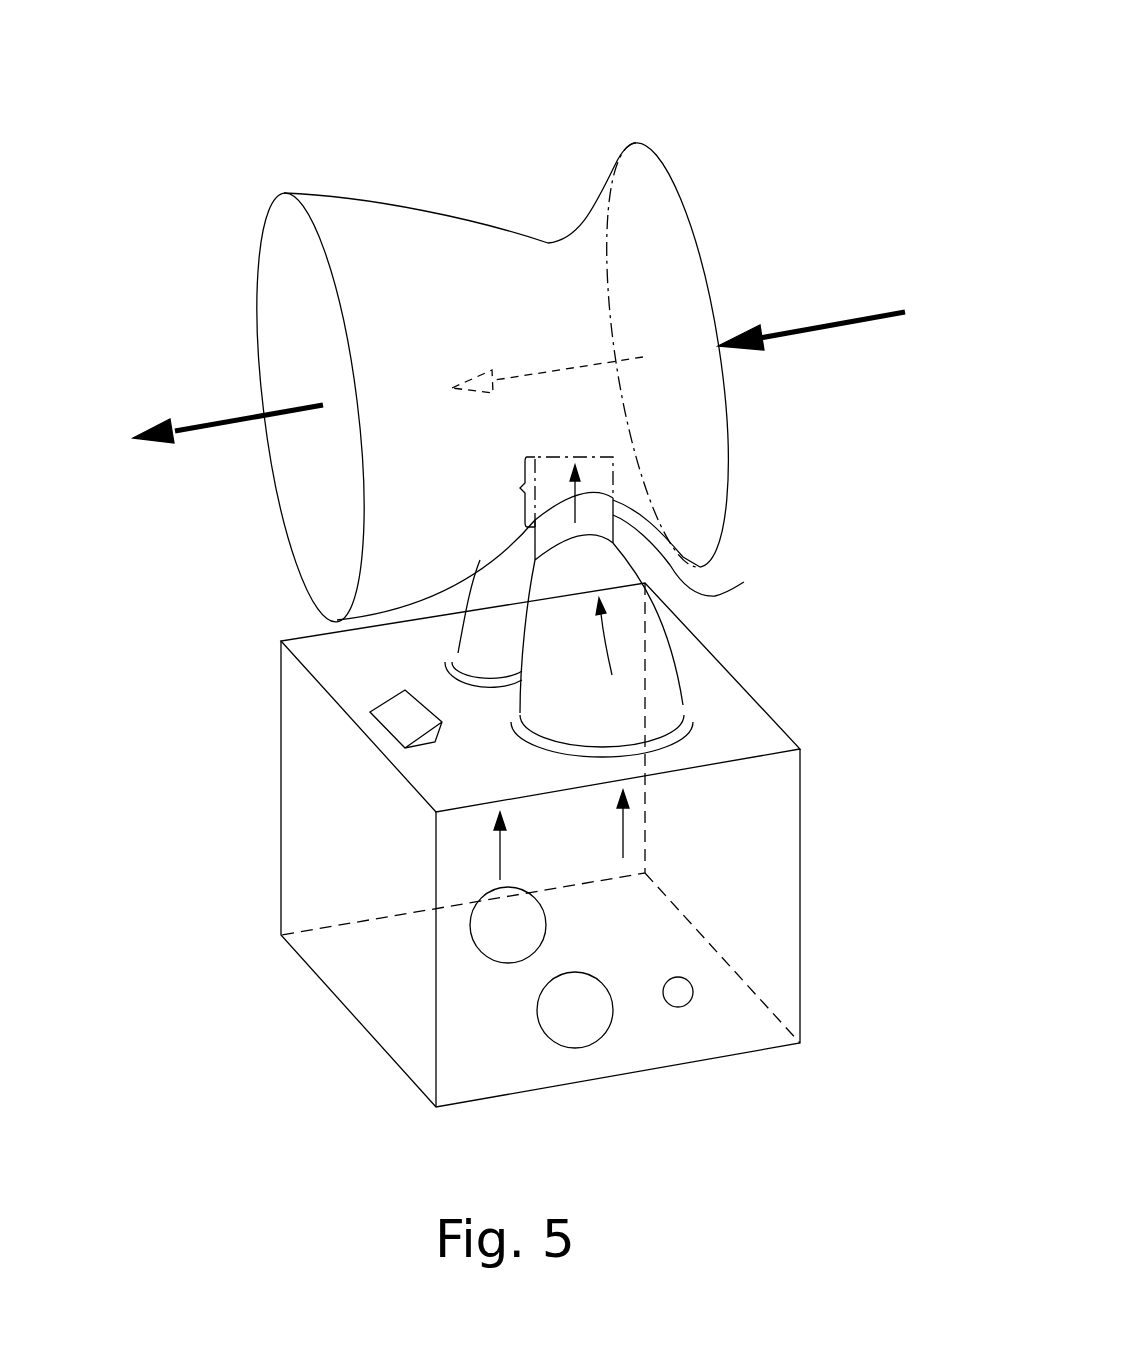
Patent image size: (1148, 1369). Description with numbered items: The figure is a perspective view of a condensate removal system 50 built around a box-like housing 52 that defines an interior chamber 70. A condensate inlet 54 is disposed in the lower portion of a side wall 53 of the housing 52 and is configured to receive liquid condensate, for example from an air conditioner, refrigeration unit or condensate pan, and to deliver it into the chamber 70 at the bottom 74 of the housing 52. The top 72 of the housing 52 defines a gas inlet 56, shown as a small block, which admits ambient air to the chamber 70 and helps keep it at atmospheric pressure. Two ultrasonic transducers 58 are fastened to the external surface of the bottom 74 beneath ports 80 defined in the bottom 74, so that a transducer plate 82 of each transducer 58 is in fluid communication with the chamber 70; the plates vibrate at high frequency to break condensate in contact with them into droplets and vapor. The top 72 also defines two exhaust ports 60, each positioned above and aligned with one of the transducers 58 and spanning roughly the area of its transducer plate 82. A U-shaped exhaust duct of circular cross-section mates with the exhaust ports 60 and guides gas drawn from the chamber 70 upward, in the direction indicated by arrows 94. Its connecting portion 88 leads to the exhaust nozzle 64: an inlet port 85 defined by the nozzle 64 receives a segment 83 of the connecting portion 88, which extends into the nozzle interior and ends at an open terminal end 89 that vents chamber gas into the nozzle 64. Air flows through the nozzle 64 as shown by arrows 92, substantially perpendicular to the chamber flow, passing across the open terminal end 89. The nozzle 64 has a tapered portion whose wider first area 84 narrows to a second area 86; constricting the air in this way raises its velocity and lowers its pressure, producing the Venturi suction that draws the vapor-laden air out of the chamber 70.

The condensate removal system 50 is at (228, 98).
The housing 52 is at (800, 812).
The side wall 53 is at (757, 848).
The condensate inlet 54 is at (692, 998).
The gas inlet 56 is at (360, 713).
The ultrasonic transducers 58 is at (493, 956).
The exhaust ports 60 is at (447, 668).
The exhaust nozzle 64 is at (333, 207).
The chamber 70 is at (765, 932).
The top 72 is at (481, 793).
The bottom 74 is at (482, 1084).
The ports 80 is at (457, 925).
The transducer plate 82 is at (490, 941).
The segment 83 is at (508, 492).
The first area 84 is at (665, 180).
The inlet port 85 is at (613, 498).
The second area 86 is at (525, 240).
The connecting portion 88 is at (698, 555).
The open terminal end 89 is at (590, 455).
The arrows 92 is at (540, 370).
The arrows 94 is at (622, 832).